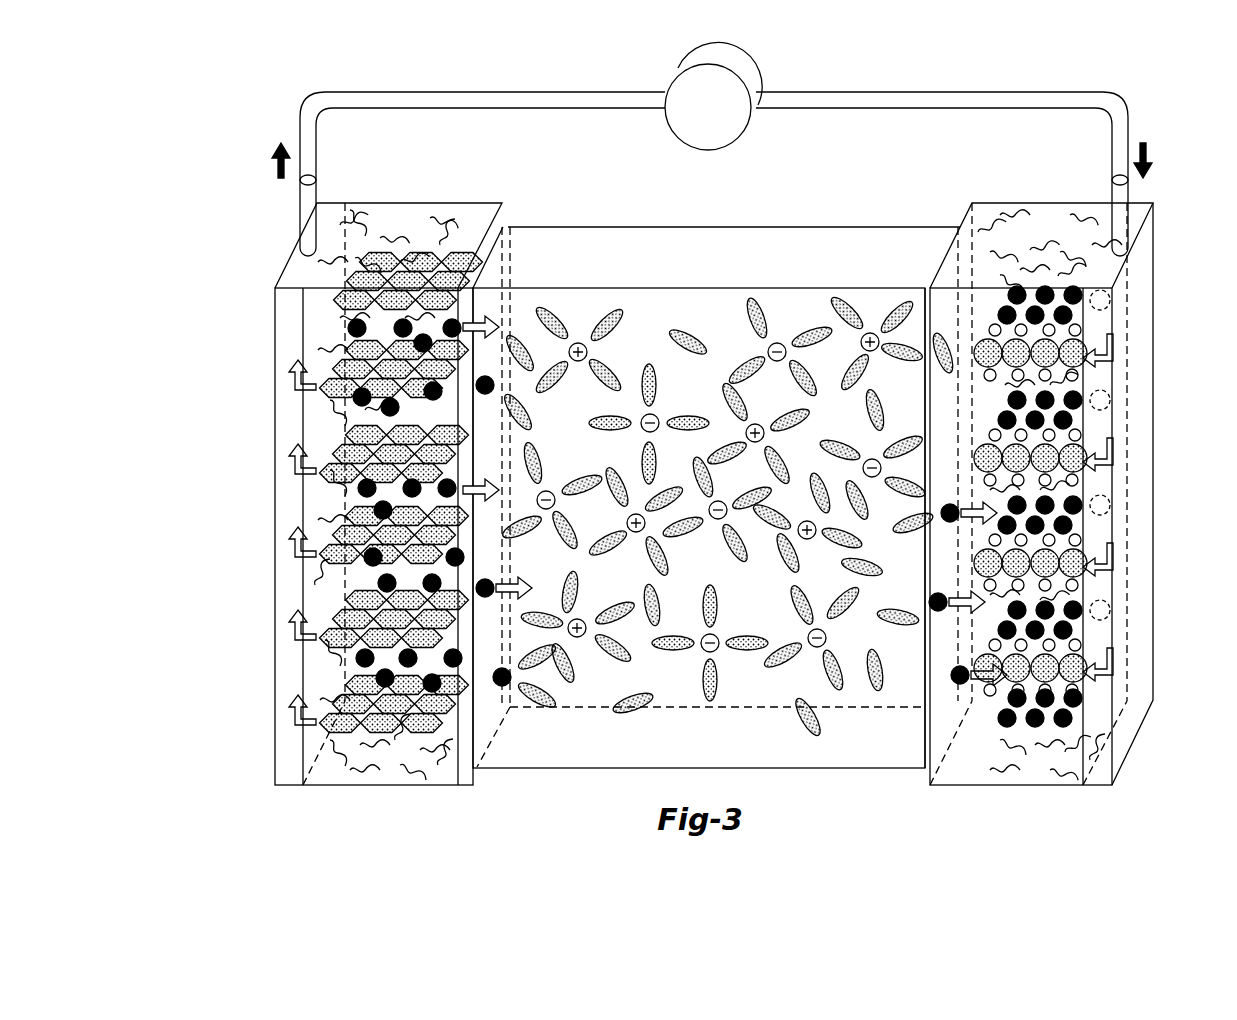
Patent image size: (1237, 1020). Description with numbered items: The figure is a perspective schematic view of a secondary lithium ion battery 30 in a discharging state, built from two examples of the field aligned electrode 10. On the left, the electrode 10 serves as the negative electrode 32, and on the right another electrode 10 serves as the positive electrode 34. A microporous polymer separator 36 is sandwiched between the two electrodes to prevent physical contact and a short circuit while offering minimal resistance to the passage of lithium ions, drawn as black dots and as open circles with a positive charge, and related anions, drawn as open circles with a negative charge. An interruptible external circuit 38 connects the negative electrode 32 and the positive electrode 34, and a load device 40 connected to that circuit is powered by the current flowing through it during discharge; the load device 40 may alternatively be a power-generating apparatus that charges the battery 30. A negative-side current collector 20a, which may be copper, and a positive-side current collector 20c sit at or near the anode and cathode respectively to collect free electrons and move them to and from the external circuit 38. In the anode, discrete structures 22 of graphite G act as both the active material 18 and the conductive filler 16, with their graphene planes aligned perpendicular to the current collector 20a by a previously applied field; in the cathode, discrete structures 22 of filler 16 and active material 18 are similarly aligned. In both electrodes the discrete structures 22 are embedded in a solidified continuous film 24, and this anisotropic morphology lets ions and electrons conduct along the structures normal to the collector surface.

The secondary lithium ion battery 30 is at (697, 441).
The external circuit 38 is at (553, 91).
The load device 40 is at (752, 68).
The solidified continuous film 24 is at (372, 228).
The discrete structures 22 is at (464, 290).
The active material 18 is at (690, 540).
The conductive filler 16 is at (1078, 540).
The graphite G is at (372, 514).
The negative-side current collector 20a is at (290, 770).
The positive-side current collector 20c is at (1100, 786).
The electrode 10 is at (690, 543).
The negative electrode 32 is at (690, 543).
The positive electrode 34 is at (1056, 557).
The microporous polymer separator 36 is at (594, 770).